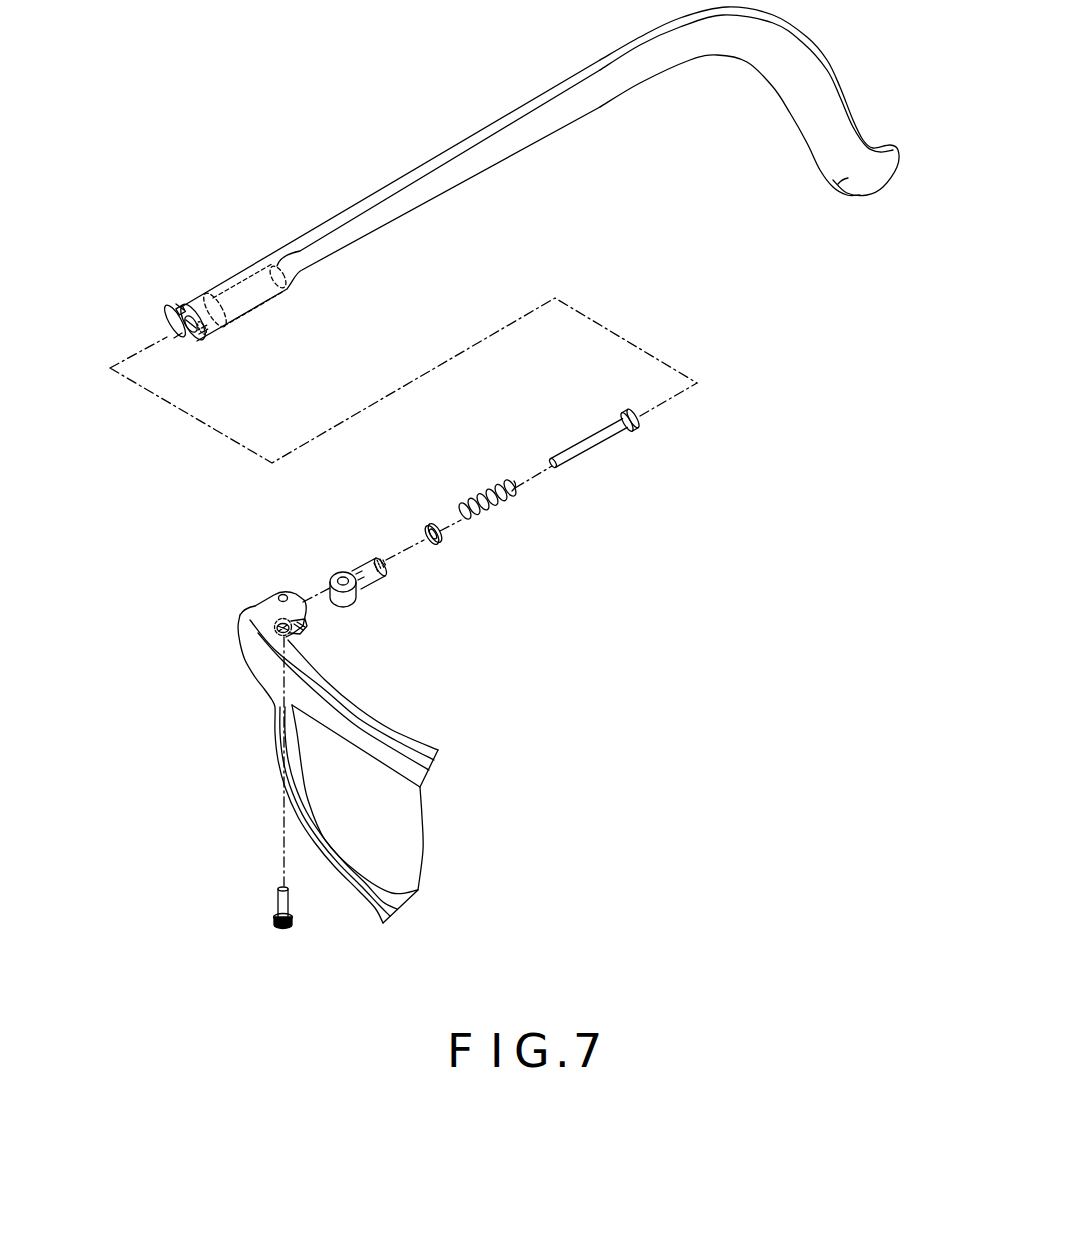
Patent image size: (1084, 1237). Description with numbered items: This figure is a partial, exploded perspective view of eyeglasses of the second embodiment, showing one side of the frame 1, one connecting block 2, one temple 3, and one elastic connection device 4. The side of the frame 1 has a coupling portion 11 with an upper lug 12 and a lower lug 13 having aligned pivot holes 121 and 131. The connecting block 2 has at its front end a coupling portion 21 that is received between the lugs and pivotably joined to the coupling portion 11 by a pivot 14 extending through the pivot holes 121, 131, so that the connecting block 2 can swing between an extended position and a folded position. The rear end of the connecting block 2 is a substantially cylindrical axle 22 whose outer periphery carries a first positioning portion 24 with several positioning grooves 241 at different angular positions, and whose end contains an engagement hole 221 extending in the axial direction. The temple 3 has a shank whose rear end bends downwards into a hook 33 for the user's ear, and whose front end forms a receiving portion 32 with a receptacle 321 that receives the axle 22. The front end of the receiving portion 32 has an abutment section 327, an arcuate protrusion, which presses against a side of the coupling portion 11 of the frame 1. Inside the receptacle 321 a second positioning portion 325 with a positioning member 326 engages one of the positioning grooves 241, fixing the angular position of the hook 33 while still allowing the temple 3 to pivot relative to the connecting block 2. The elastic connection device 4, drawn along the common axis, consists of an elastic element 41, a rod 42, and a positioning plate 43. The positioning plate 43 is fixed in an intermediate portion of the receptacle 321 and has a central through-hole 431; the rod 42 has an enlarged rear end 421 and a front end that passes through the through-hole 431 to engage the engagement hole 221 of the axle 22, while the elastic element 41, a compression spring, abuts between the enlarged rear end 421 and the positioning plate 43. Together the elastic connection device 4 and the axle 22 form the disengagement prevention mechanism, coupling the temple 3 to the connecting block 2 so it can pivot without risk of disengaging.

The frame 1 is at (311, 727).
The coupling portion 11 is at (243, 608).
The upper lug 12 is at (245, 581).
The pivot hole 121 is at (277, 610).
The lower lug 13 is at (293, 633).
The pivot hole 131 is at (302, 628).
The pivot 14 is at (278, 903).
The connecting block 2 is at (364, 562).
The coupling portion 21 is at (333, 575).
The axle 22 is at (385, 562).
The engagement hole 221 is at (363, 566).
The first positioning portion 24 is at (397, 604).
The positioning grooves 241 is at (365, 590).
The temple 3 is at (504, 227).
The receiving portion 32 is at (199, 320).
The receptacle 321 is at (177, 306).
The second positioning portion 325 is at (192, 340).
The positioning member 326 is at (208, 332).
The abutment section 327 is at (168, 320).
The hook 33 is at (832, 150).
The elastic connection device 4 is at (540, 502).
The elastic element 41 is at (477, 502).
The rod 42 is at (620, 458).
The enlarged rear end 421 is at (640, 430).
The positioning plate 43 is at (436, 532).
The through-hole 431 is at (424, 532).